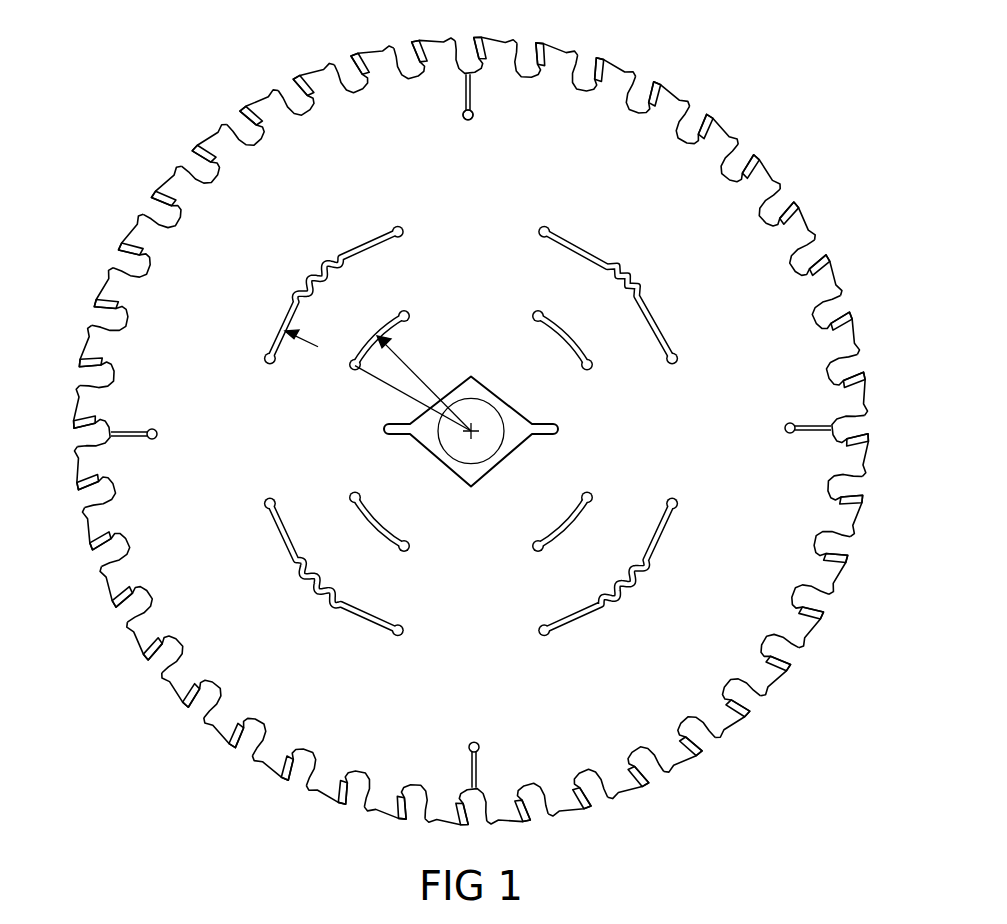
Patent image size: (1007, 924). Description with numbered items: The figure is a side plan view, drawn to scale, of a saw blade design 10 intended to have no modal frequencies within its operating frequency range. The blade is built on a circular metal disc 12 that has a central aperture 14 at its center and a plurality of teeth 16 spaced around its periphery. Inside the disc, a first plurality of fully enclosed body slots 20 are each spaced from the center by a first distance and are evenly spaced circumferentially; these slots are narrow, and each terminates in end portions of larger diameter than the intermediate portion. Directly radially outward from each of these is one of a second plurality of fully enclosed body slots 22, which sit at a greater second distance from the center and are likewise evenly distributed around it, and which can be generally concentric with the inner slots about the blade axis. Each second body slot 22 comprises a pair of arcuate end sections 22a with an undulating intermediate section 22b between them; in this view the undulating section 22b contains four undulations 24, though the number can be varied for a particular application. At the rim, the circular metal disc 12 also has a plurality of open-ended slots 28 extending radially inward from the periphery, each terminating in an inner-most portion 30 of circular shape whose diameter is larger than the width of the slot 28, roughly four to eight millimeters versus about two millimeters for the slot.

The saw blade design 10 is at (775, 151).
The circular metal disc 12 is at (673, 441).
The central aperture 14 is at (498, 452).
The teeth 16 is at (653, 80).
The first plurality of fully enclosed body slots 20 is at (393, 322).
The second plurality of fully enclosed body slots 22 is at (357, 247).
The arcuate end sections 22a is at (362, 250).
The undulating intermediate section 22b is at (320, 268).
The undulations 24 is at (621, 263).
The open-ended slots 28 is at (466, 84).
The inner-most portion 30 is at (473, 117).